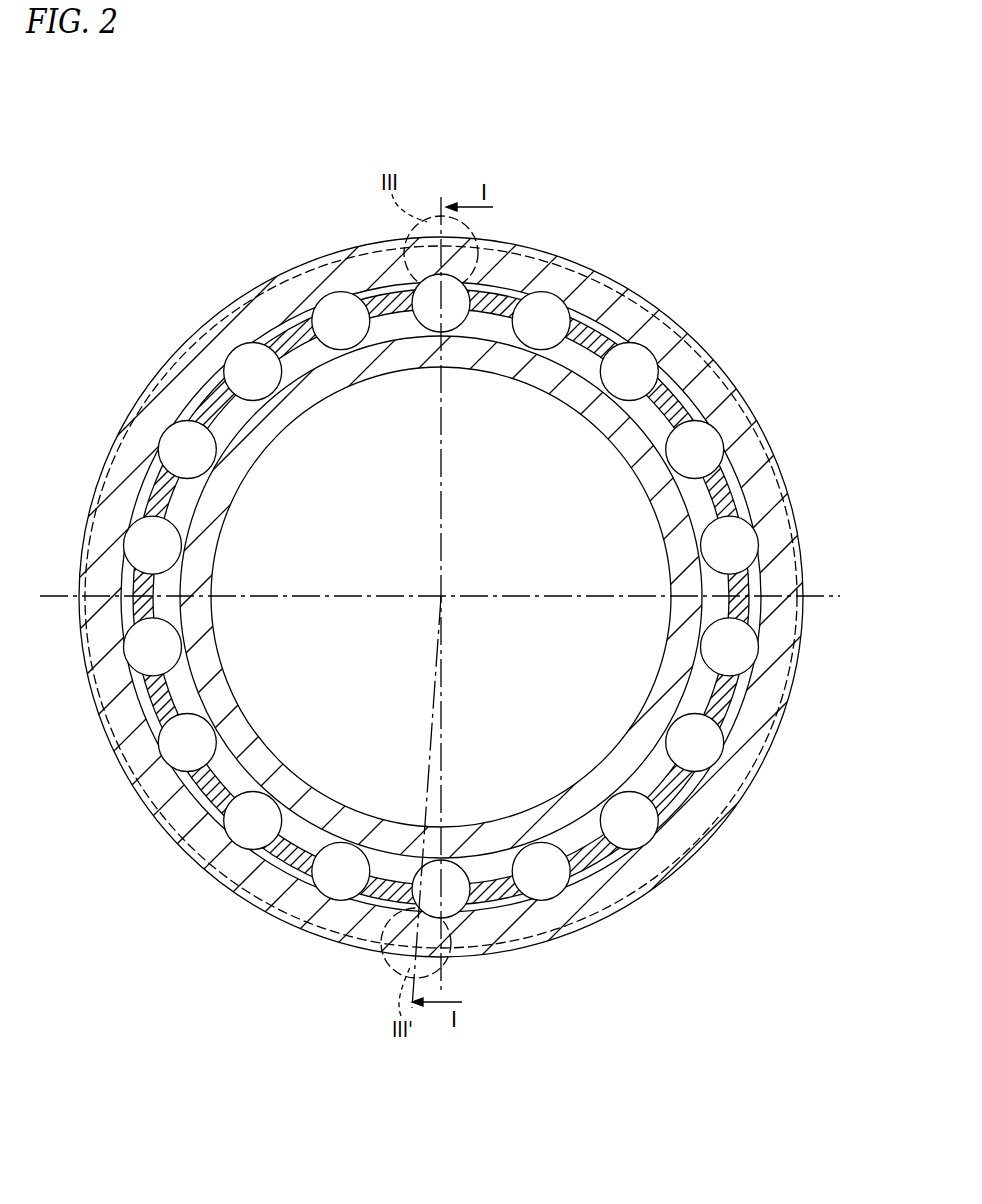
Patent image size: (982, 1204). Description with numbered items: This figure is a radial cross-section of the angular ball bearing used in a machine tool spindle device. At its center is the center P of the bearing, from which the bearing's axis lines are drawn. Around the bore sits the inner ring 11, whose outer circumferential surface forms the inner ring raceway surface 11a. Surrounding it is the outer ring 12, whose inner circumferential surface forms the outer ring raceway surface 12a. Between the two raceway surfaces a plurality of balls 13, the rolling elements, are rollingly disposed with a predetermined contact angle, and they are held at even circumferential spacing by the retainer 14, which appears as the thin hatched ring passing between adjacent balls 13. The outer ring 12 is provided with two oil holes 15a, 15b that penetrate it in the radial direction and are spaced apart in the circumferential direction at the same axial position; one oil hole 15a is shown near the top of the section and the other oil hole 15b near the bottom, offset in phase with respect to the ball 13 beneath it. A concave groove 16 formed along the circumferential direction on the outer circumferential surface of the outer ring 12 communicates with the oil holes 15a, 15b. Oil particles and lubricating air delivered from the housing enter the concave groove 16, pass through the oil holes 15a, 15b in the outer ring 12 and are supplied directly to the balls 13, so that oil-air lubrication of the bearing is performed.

The inner ring 11 is at (252, 743).
The inner ring raceway surface 11a is at (703, 690).
The outer ring 12 is at (143, 770).
The outer ring raceway surface 12a is at (682, 793).
The ball 13 is at (255, 357).
The retainer 14 is at (713, 361).
The oil hole 15a is at (483, 242).
The oil hole 15b is at (378, 948).
The concave groove 16 is at (645, 890).
The center of the angular ball bearing P is at (443, 594).